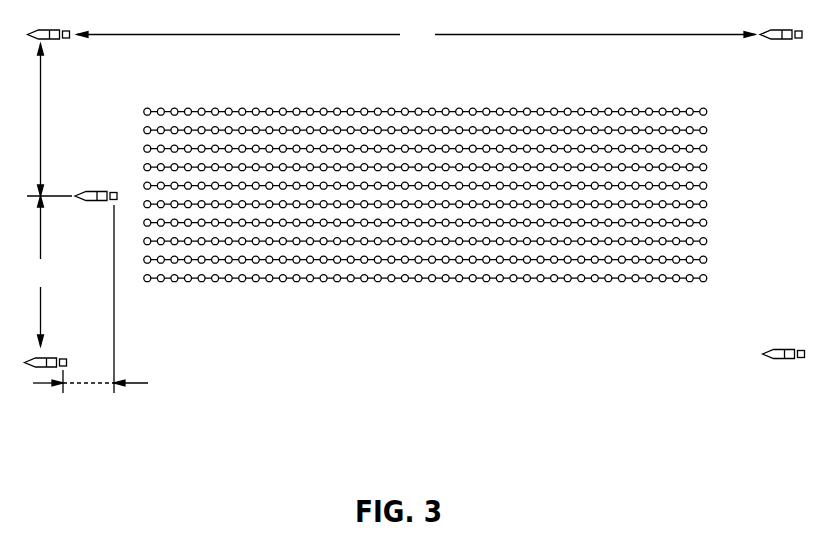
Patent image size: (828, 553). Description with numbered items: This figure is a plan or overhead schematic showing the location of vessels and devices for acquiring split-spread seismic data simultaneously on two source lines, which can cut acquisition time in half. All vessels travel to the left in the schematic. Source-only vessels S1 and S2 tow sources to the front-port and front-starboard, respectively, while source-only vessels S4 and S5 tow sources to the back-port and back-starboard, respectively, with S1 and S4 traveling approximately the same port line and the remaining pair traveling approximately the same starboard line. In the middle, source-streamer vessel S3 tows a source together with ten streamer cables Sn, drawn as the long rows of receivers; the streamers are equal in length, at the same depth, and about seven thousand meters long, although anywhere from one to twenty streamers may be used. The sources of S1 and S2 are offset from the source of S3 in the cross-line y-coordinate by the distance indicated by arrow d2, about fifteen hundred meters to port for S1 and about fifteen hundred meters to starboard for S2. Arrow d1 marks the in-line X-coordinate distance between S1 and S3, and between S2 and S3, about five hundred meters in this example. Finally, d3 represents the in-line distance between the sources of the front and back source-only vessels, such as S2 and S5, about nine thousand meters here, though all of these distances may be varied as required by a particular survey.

The streamer cables Sn is at (207, 107).
The source-only vessel S1 is at (52, 358).
The source-only vessel S2 is at (55, 40).
The source-streamer vessel S3 is at (101, 192).
The source-only vessel S4 is at (778, 350).
The source-only vessel S5 is at (778, 40).
The in-line distance d1 is at (106, 299).
The cross-line distance d2 is at (49, 195).
The in-line source separation distance d3 is at (416, 34).